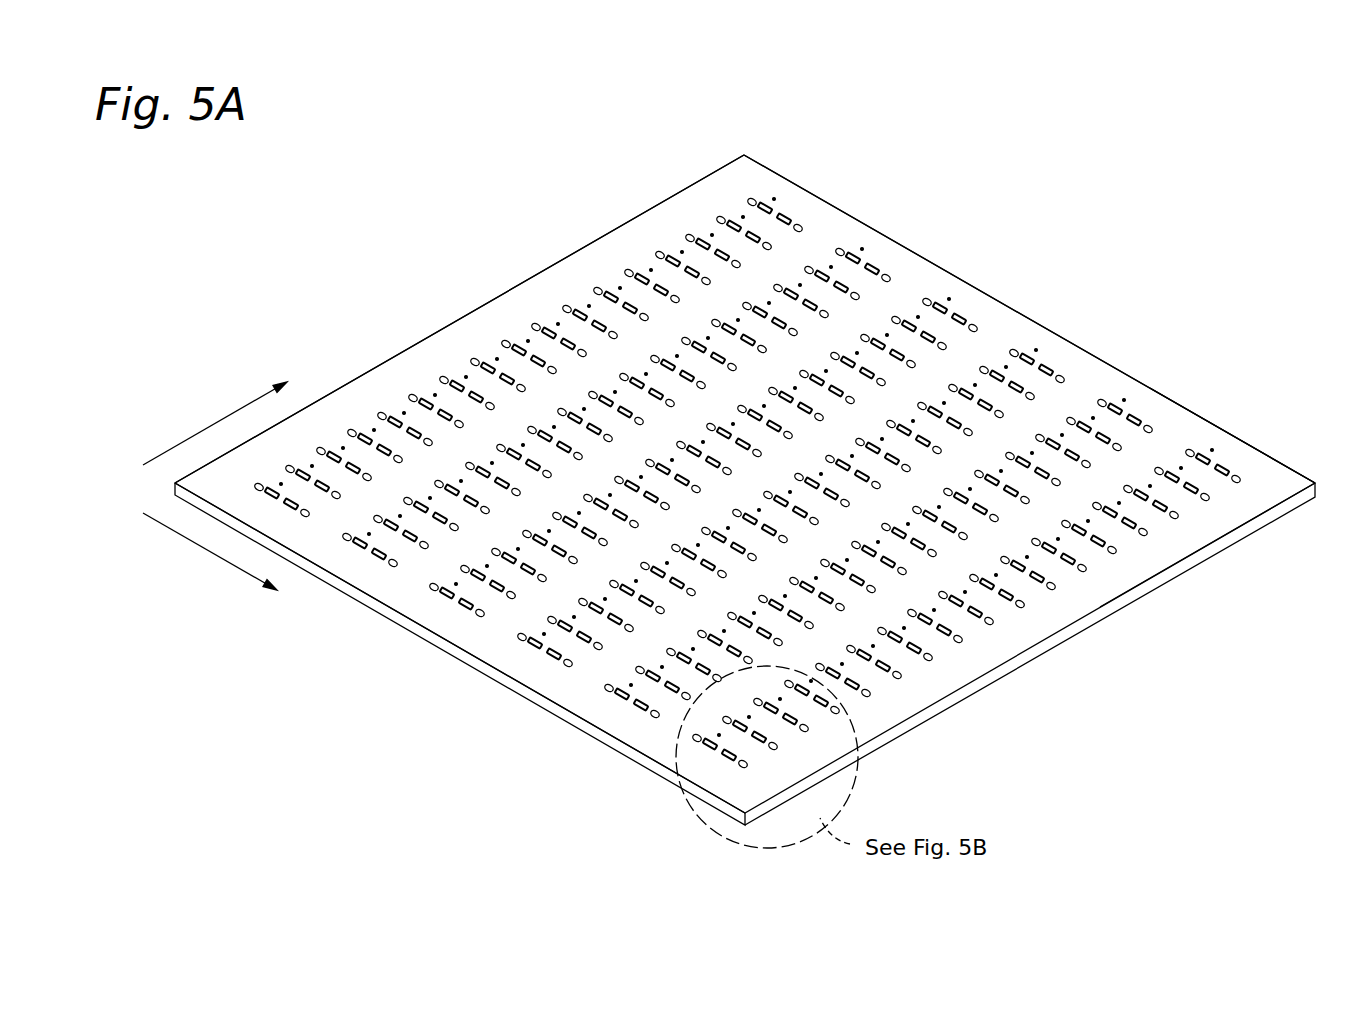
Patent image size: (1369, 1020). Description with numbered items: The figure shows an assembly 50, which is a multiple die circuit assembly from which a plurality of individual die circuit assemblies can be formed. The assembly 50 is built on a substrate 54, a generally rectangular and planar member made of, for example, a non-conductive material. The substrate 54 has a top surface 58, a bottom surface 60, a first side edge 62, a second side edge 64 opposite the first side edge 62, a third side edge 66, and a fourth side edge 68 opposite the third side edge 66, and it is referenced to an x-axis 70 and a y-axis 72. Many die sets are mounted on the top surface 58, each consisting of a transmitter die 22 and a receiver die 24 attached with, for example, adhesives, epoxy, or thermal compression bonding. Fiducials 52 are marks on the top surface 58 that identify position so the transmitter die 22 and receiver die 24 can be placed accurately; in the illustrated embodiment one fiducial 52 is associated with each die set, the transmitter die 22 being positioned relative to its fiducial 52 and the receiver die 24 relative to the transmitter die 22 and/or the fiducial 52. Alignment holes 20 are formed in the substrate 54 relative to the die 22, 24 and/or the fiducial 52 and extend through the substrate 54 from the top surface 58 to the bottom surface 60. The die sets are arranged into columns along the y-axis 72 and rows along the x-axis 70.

The alignment holes 20 is at (897, 679).
The transmitter die 22 is at (707, 747).
The receiver die 24 is at (724, 758).
The assembly 50 is at (760, 485).
The fiducials 52 is at (750, 718).
The substrate 54 is at (1260, 477).
The top surface 58 is at (1172, 422).
The bottom surface 60 is at (1117, 575).
The first side edge 62 is at (1040, 657).
The second side edge 64 is at (625, 222).
The third side edge 66 is at (913, 250).
The fourth side edge 68 is at (492, 680).
The x-axis 70 is at (193, 540).
The y-axis 72 is at (208, 428).